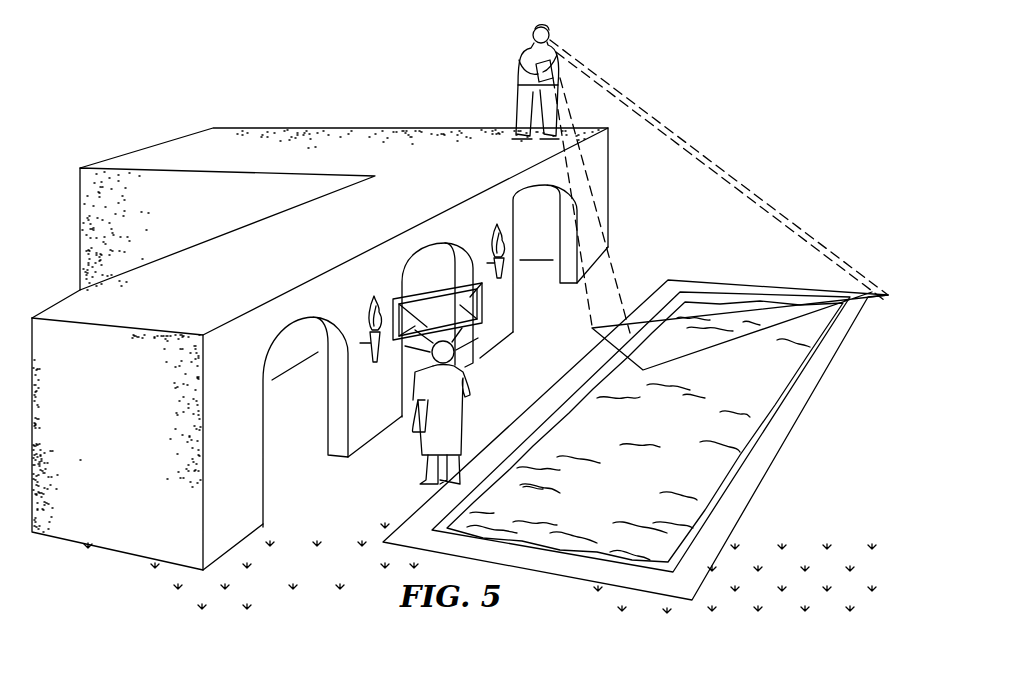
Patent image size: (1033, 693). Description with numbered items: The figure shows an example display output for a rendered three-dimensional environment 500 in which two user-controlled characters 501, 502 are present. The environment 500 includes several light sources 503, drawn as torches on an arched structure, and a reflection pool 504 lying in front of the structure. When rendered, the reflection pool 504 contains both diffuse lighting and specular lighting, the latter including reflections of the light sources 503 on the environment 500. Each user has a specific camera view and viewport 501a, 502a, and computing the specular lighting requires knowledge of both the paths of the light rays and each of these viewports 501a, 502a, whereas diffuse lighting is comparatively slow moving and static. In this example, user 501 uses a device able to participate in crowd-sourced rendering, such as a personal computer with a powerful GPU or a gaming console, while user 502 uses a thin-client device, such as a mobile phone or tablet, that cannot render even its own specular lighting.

The 3D environment 500 is at (703, 46).
The user-controlled character 501 is at (518, 62).
The viewport 501a is at (748, 342).
The user-controlled character 502 is at (473, 388).
The viewport 502a is at (420, 305).
The light sources 503 is at (498, 278).
The reflection pool 504 is at (727, 481).